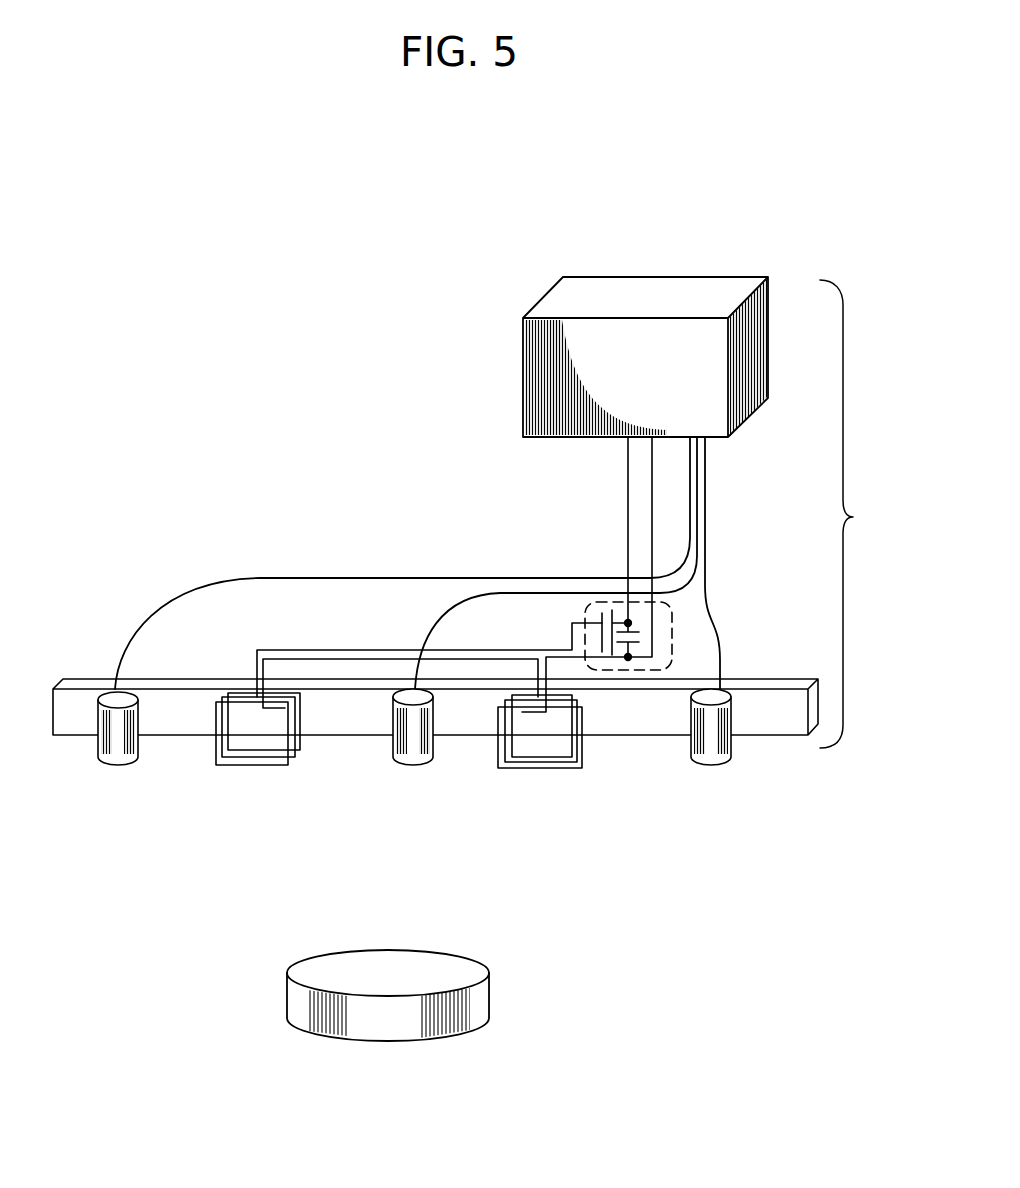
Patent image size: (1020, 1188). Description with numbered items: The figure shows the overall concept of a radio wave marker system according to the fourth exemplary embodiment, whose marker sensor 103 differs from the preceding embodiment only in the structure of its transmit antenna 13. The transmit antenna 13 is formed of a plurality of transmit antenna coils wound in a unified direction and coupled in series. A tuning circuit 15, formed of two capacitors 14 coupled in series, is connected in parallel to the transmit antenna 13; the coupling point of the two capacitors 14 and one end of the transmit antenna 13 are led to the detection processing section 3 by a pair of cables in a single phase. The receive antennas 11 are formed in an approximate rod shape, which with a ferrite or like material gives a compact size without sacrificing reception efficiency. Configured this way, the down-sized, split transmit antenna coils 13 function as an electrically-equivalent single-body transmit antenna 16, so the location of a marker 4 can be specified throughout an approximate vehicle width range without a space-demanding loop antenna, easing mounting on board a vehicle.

The detection processing section 3 is at (573, 290).
The marker 4 is at (467, 963).
The receive antenna 11 is at (118, 715).
The transmit antenna 13 is at (253, 695).
The capacitors 14 is at (619, 648).
The tuning circuit 15 is at (672, 608).
The single-body transmit antenna 16 is at (507, 768).
The marker sensor 103 is at (871, 514).